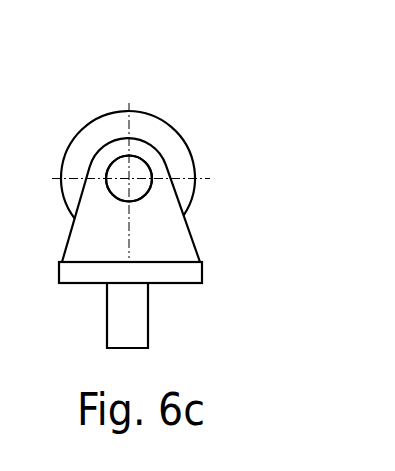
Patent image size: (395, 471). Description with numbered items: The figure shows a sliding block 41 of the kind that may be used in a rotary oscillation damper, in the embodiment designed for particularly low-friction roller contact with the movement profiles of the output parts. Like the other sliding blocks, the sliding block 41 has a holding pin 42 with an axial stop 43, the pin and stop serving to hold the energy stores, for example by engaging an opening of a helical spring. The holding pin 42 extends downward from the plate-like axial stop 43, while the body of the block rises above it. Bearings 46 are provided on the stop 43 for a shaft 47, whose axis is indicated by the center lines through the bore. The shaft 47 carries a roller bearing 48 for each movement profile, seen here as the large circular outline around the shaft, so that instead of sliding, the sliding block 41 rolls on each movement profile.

The sliding block 41 is at (144, 210).
The holding pin 42 is at (121, 323).
The axial stop 43 is at (72, 300).
The bearings 46 is at (148, 166).
The shaft 47 is at (139, 162).
The roller bearing 48 is at (98, 137).